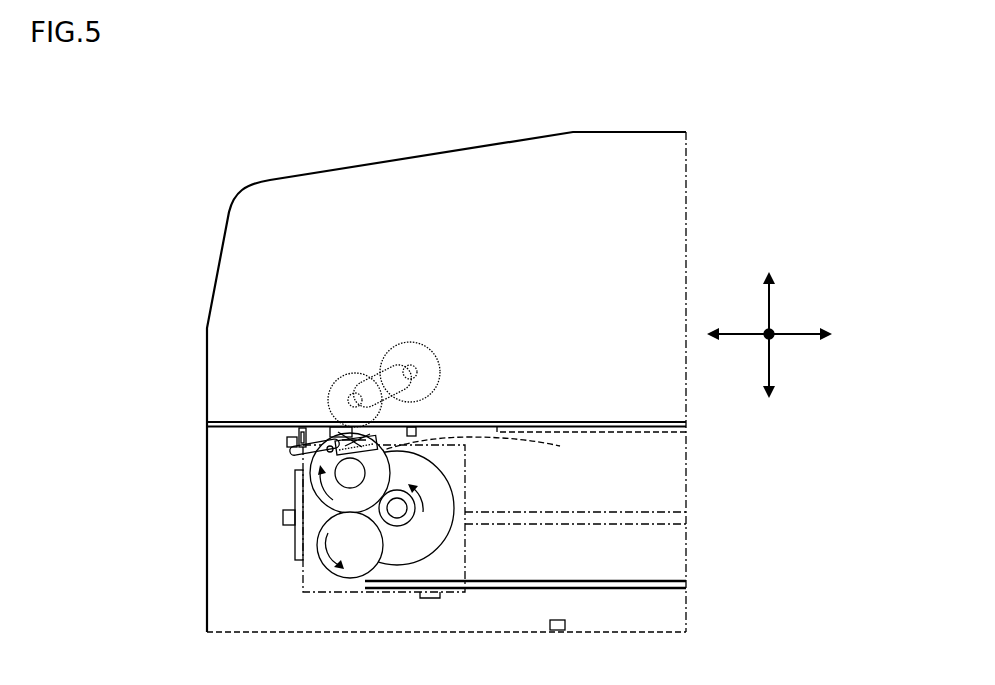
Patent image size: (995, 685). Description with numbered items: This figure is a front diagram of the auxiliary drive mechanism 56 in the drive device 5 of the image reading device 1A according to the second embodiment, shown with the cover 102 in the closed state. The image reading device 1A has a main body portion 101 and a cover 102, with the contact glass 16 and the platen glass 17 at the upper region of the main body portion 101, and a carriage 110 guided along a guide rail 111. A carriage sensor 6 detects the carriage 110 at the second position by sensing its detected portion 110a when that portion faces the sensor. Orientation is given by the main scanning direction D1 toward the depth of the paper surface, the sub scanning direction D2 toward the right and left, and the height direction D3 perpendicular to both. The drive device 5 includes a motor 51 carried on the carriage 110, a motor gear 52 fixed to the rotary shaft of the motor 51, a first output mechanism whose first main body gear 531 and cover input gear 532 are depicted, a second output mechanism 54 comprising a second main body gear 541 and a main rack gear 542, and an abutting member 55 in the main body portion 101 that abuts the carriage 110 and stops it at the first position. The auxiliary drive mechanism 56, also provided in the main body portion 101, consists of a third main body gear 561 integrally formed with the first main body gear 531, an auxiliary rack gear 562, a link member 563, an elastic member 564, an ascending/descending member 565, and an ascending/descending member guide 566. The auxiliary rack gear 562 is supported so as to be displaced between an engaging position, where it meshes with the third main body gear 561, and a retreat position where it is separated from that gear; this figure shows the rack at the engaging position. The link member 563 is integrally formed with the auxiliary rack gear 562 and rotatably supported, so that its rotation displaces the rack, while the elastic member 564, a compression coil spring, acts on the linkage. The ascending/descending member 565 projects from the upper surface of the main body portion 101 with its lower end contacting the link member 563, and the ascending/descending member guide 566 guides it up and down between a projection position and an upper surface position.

The image reading device 1A is at (800, 127).
The drive device 5 is at (288, 311).
The carriage sensor 6 is at (565, 627).
The contact glass 16 is at (532, 448).
The platen glass 17 is at (607, 436).
The motor 51 is at (447, 480).
The motor gear 52 is at (410, 518).
The second output mechanism 54 is at (640, 498).
The abutting member 55 is at (295, 495).
The auxiliary drive mechanism 56 is at (255, 441).
The main body portion 101 is at (205, 457).
The cover 102 is at (219, 253).
The carriage 110 is at (303, 577).
The detected portion 110a is at (440, 598).
The guide rail 111 is at (648, 527).
The first main body gear 531 is at (392, 463).
The cover input gear 532 is at (355, 372).
The second main body gear 541 is at (344, 578).
The main rack gear 542 is at (545, 580).
The third main body gear 561 is at (365, 472).
The auxiliary rack gear 562 is at (385, 443).
The link member 563 is at (291, 457).
The elastic member 564 is at (348, 438).
The ascending/descending member 565 is at (302, 428).
The ascending/descending member guide 566 is at (290, 437).
The main scanning direction D1 is at (772, 330).
The sub scanning direction D2 is at (725, 330).
The height direction D3 is at (772, 362).